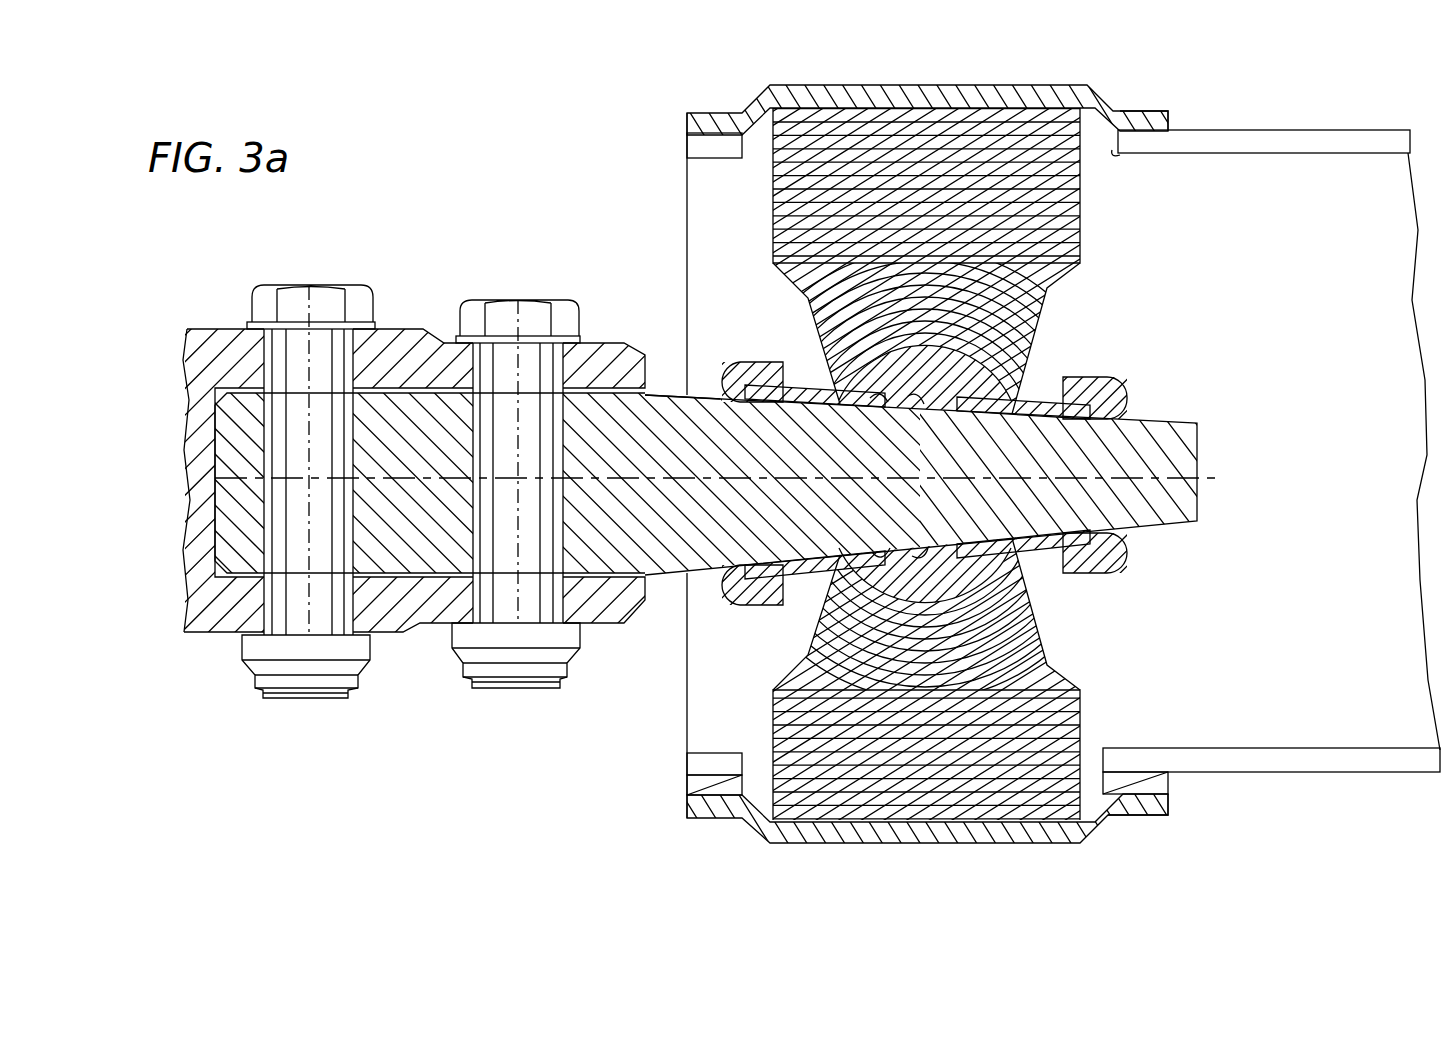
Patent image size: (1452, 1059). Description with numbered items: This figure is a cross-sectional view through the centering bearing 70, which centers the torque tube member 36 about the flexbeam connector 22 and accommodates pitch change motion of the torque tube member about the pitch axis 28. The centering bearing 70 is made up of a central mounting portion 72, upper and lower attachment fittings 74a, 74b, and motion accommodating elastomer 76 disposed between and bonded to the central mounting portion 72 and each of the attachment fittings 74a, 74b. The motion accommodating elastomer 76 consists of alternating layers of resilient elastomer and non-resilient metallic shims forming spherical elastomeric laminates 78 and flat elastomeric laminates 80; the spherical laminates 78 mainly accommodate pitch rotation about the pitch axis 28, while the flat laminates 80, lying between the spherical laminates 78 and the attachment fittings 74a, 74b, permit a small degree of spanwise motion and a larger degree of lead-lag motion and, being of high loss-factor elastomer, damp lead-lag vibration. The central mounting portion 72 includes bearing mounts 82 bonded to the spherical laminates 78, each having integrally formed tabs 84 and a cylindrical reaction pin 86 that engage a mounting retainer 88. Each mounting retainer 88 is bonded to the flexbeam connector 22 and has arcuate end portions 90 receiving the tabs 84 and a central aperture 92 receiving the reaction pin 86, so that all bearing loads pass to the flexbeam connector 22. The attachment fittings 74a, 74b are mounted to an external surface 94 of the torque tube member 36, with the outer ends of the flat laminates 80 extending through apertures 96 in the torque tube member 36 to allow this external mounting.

The flexbeam connector 22 is at (1050, 516).
The pitch axis 28 is at (688, 497).
The torque tube member 36 is at (1238, 133).
The centering bearing 70 is at (703, 246).
The central mounting portion 72 is at (1160, 553).
The upper attachment fitting 74a is at (828, 90).
The lower attachment fitting 74b is at (868, 845).
The motion accommodating elastomer 76 is at (1032, 314).
The spherical elastomeric laminate 78 is at (927, 318).
The flat elastomeric laminate 80 is at (921, 198).
The bearing mount 82 is at (940, 382).
The tab 84 is at (762, 362).
The cylindrical reaction pin 86 is at (914, 404).
The mounting retainer 88 is at (1027, 412).
The arcuate end portion 90 is at (1100, 378).
The central aperture 92 is at (876, 398).
The external surface 94 is at (1180, 128).
The aperture 96 is at (1112, 155).